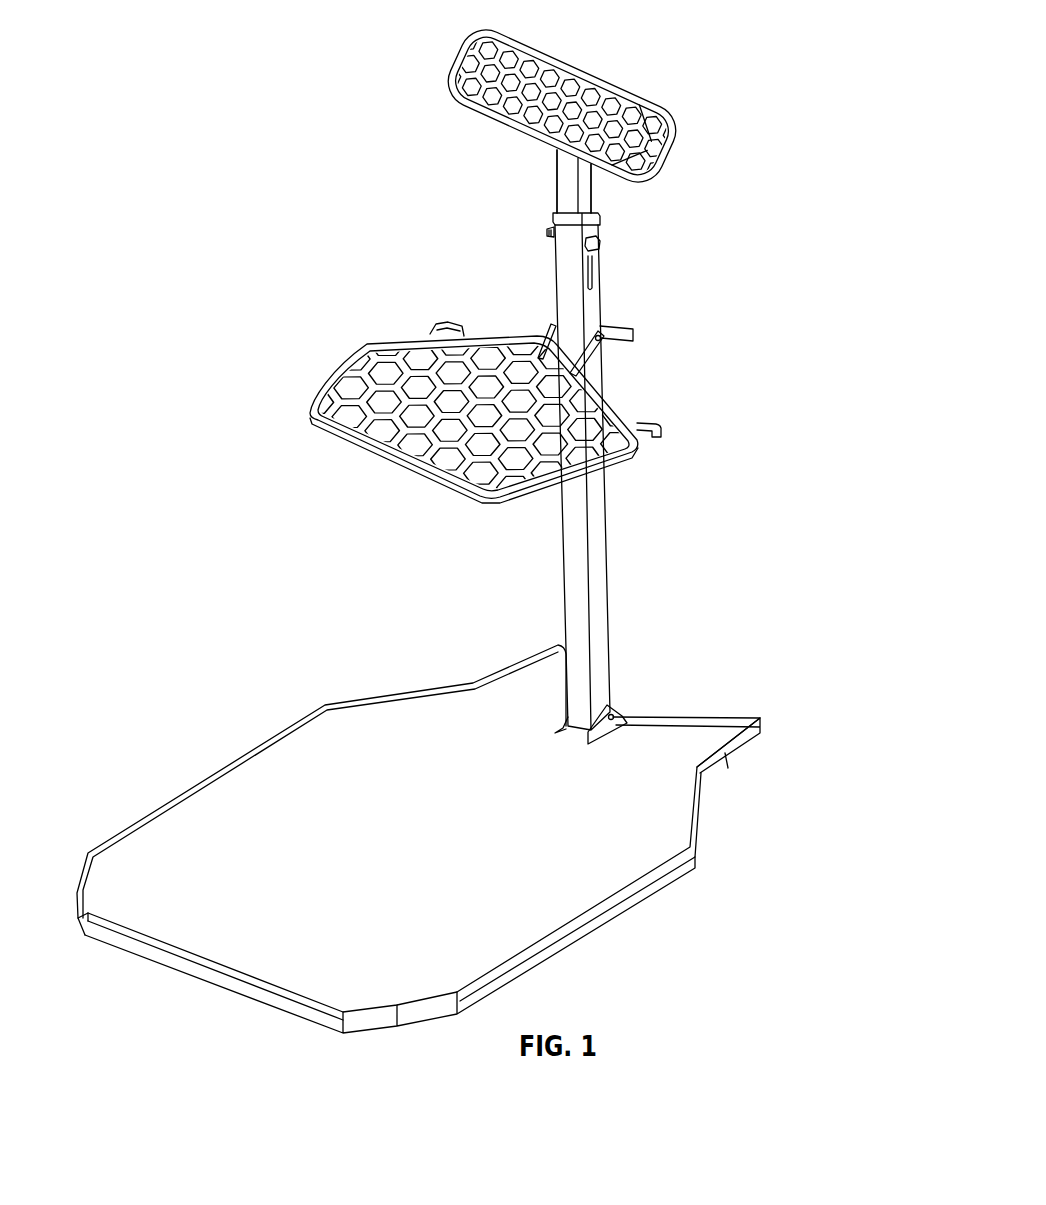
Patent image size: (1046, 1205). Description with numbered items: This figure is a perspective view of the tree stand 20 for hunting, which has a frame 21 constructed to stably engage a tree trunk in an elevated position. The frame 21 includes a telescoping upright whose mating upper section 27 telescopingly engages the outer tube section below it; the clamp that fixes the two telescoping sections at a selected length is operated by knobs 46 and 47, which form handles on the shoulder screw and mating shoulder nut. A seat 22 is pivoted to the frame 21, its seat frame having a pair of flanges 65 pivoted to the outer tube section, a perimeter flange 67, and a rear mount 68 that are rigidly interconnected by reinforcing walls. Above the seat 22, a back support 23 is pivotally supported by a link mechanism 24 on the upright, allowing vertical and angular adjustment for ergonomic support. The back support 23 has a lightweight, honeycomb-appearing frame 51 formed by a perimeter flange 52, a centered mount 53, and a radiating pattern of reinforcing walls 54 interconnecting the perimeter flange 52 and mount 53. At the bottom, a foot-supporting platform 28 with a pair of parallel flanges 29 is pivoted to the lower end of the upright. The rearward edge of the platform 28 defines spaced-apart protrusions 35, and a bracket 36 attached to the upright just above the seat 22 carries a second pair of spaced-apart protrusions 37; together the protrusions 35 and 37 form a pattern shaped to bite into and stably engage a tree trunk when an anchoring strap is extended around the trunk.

The tree stand 20 is at (770, 72).
The frame 21 is at (615, 557).
The seat 22 is at (297, 425).
The back support 23 is at (430, 116).
The link mechanism 24 is at (600, 185).
The upper section 27 is at (557, 202).
The foot-supporting platform 28 is at (271, 732).
The flanges 29 is at (623, 713).
The protrusions 35 is at (542, 647).
The bracket 36 is at (642, 352).
The protrusions 37 is at (627, 322).
The knob 46 is at (600, 247).
The knob 47 is at (548, 233).
The frame 51 is at (500, 128).
The perimeter flange 52 is at (440, 72).
The centered mount 53 is at (617, 66).
The reinforcing walls 54 is at (653, 145).
The flanges 65 is at (550, 326).
The perimeter flange 67 is at (357, 350).
The rear mount 68 is at (423, 353).